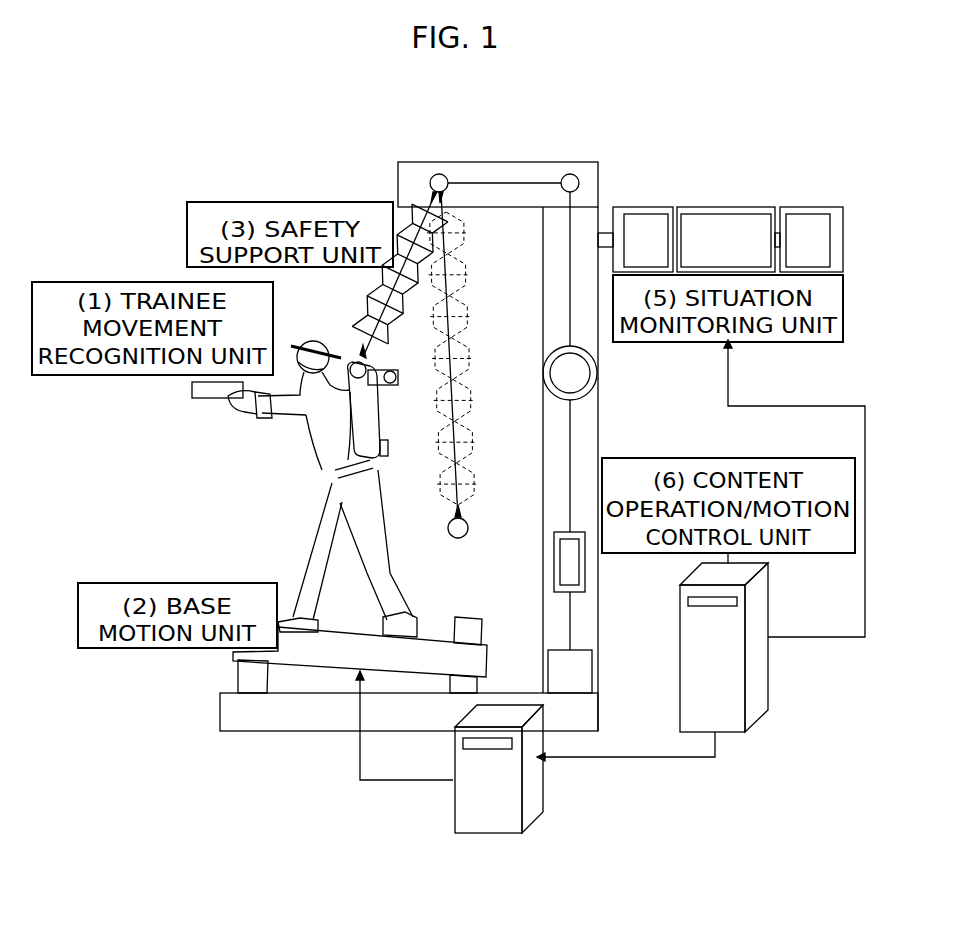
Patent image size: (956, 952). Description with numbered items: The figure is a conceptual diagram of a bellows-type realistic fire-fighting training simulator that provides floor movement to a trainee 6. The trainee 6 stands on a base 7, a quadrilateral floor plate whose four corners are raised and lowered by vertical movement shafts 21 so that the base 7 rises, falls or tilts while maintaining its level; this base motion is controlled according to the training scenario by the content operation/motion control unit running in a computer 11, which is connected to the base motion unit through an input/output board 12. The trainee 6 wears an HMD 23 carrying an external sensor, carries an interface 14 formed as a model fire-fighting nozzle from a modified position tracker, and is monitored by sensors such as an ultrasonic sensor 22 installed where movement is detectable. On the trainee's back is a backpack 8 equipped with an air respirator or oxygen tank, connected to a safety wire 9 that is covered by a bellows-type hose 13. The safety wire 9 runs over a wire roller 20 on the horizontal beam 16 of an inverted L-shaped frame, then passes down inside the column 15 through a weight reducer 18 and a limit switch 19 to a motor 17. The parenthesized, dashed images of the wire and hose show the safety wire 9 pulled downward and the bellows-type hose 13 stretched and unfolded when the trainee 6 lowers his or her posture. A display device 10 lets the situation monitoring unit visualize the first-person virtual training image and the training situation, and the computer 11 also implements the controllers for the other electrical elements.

The trainee 6 is at (310, 448).
The base 7 is at (330, 665).
The backpack 8 is at (388, 445).
The safety wire 9 is at (365, 305).
The display device 10 is at (757, 207).
The computer 11 is at (768, 678).
The input/output (I/O) board 12 is at (487, 833).
The bellows-type hose 13 is at (410, 213).
The interface 14 is at (205, 400).
The column 15 is at (598, 213).
The horizontal beam 16 is at (497, 162).
The motor 17 is at (592, 672).
The weight reducer 18 is at (597, 385).
The limit switch 19 is at (554, 556).
The wire roller 20 is at (439, 174).
The vertical movement shafts 21 is at (238, 677).
The ultrasonic sensor 22 is at (393, 386).
The HMD 23 is at (270, 418).